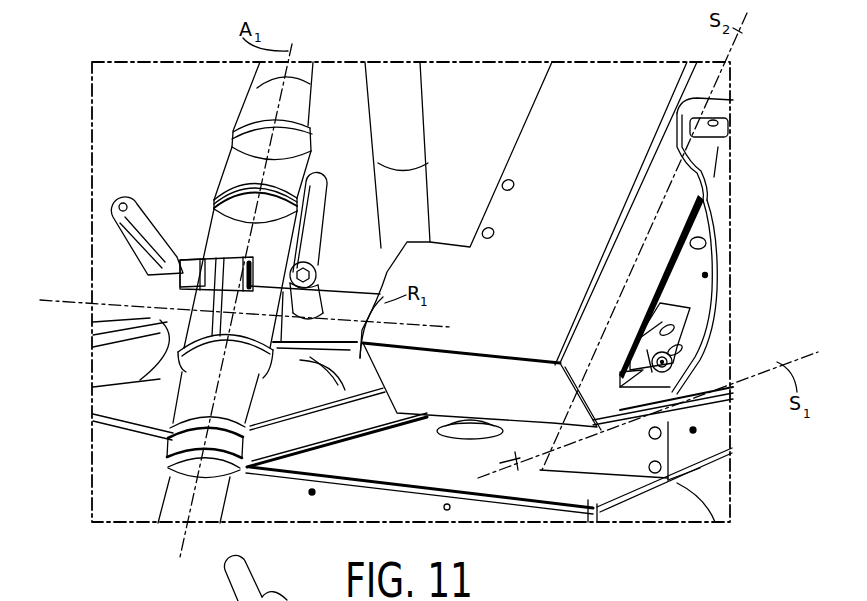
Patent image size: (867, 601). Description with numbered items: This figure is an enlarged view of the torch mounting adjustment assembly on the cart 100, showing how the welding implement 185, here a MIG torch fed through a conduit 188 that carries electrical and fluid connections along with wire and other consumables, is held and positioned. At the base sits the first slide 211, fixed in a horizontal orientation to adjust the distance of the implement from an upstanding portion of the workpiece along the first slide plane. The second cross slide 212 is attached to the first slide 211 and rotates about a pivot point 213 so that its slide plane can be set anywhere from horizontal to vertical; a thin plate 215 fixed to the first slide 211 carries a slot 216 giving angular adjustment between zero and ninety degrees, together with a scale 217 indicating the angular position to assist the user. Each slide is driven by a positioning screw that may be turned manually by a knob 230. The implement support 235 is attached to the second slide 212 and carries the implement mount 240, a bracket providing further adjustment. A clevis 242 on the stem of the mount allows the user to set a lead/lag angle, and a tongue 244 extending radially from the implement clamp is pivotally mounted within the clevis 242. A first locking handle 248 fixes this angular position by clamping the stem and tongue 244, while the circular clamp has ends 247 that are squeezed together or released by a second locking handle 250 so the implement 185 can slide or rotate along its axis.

The cart 100 is at (155, 117).
The implement 185 is at (190, 407).
The conduit 188 is at (402, 103).
The first slide 211 is at (720, 440).
The second cross slide 212 is at (688, 263).
The pivot point 213 is at (658, 318).
The plate 215 is at (718, 333).
The slot 216 is at (727, 120).
The scale 217 is at (718, 163).
The knob 230 is at (403, 578).
The implement support 235 is at (572, 83).
The implement mount 240 is at (192, 322).
The clevis 242 is at (343, 305).
The tongue 244 is at (349, 391).
The ends 247 is at (253, 328).
The first locking handle 248 is at (313, 183).
The second locking handle 250 is at (118, 200).